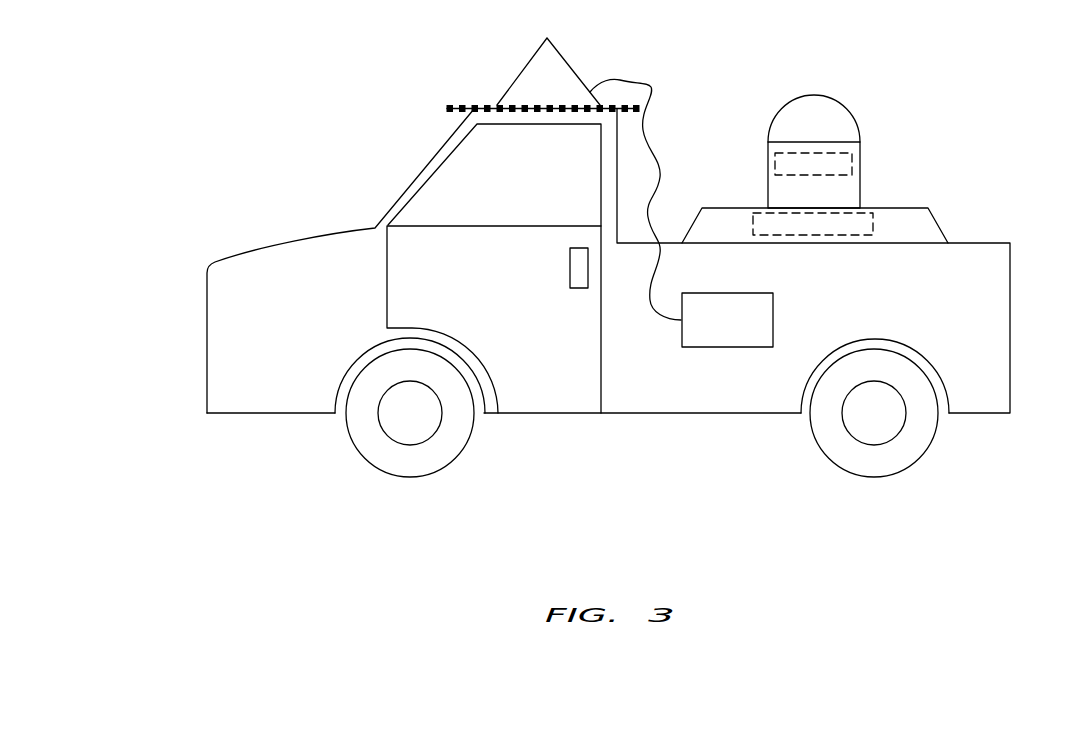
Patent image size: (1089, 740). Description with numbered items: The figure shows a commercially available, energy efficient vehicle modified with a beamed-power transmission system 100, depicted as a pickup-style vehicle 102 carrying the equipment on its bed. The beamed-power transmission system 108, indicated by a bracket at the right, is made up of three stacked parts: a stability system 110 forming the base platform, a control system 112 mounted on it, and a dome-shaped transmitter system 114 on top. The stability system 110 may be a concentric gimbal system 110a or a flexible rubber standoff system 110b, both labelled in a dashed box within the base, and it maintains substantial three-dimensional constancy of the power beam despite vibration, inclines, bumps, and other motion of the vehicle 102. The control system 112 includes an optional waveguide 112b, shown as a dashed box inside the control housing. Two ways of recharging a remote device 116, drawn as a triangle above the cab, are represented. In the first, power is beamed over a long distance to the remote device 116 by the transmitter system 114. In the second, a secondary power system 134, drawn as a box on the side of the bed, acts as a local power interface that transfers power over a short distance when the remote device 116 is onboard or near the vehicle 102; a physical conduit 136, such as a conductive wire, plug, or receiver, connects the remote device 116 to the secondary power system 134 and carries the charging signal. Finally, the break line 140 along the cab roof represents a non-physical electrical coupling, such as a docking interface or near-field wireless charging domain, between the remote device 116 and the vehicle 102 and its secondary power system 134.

The vehicle modified with a beamed-power transmission system 100 is at (342, 89).
The vehicle 102 is at (207, 341).
The beamed-power transmission system 108 is at (1023, 70).
The stability system 110 is at (938, 227).
The concentric gimbal system 110a is at (818, 224).
The flexible rubber standoff system 110b is at (818, 224).
The control system 112 is at (861, 151).
The waveguide 112b is at (813, 164).
The transmitter system 114 is at (845, 100).
The remote device 116 is at (562, 57).
The secondary power system 134 is at (763, 301).
The physical conduit 136 is at (651, 87).
The break line 140 is at (460, 102).